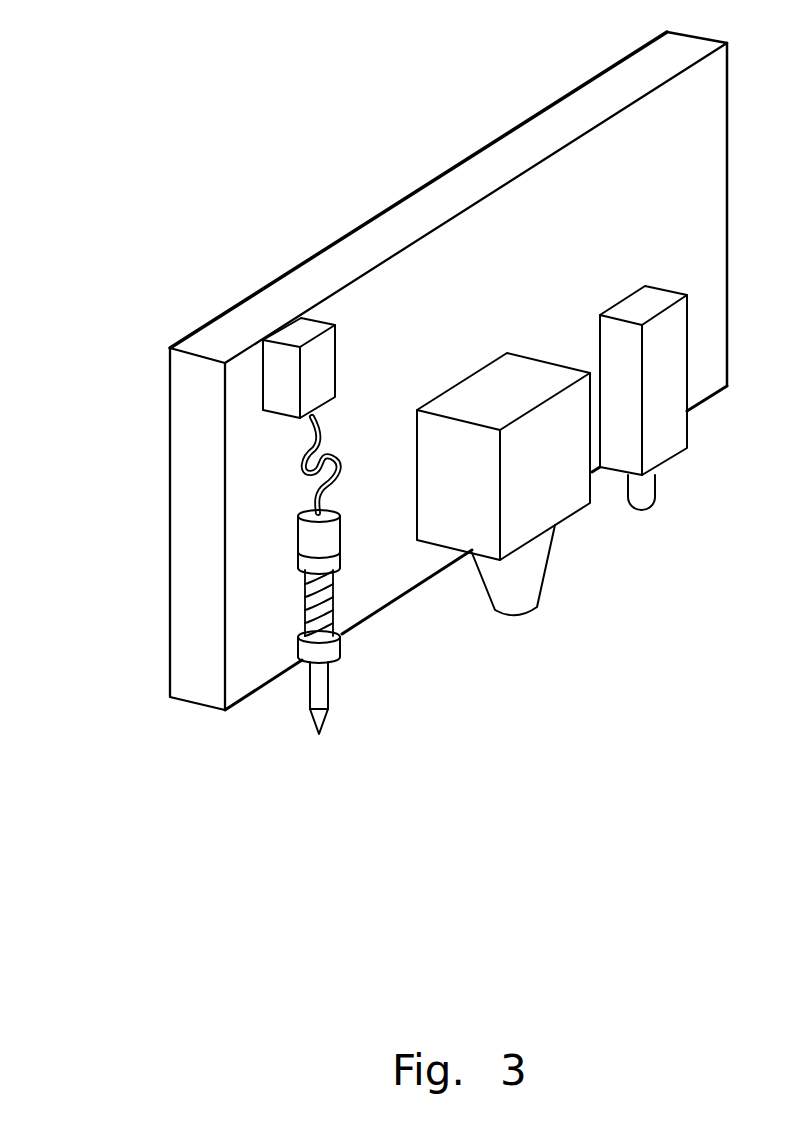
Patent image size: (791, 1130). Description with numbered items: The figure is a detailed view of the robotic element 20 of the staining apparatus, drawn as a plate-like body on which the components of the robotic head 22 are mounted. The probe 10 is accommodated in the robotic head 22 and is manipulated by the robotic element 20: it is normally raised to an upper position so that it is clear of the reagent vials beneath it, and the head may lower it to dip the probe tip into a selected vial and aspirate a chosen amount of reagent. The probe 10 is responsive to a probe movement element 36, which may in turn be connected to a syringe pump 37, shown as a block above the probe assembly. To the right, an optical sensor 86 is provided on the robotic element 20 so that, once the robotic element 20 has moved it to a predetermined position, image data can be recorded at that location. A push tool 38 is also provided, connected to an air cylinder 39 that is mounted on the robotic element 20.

The robotic element 20 is at (392, 193).
The robotic head 22 is at (202, 490).
The syringe pump 37 is at (317, 362).
The probe movement element 36 is at (297, 579).
The probe 10 is at (320, 687).
The optical sensor 86 is at (515, 587).
The air cylinder 39 is at (668, 360).
The push tool 38 is at (648, 497).